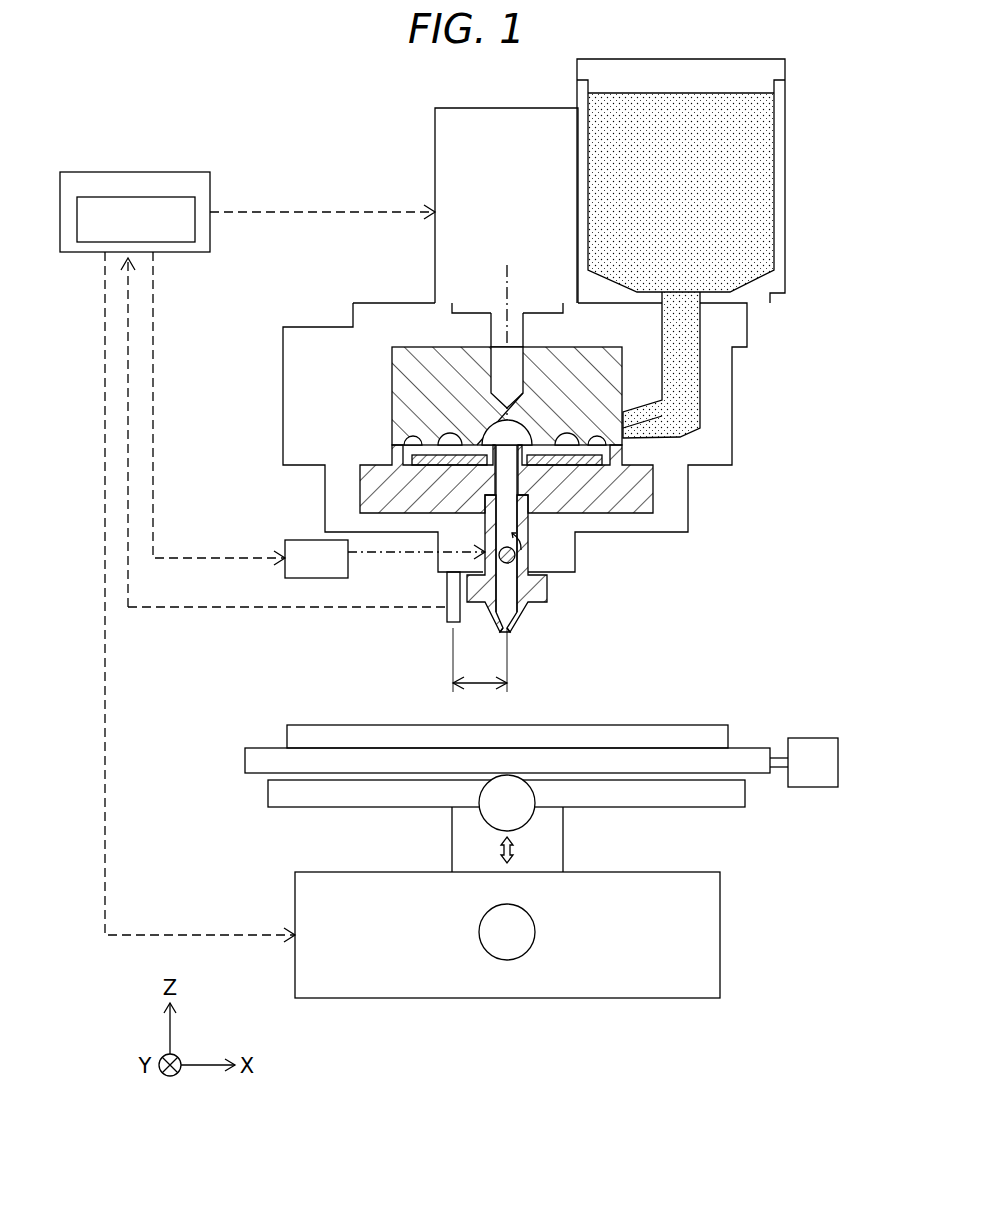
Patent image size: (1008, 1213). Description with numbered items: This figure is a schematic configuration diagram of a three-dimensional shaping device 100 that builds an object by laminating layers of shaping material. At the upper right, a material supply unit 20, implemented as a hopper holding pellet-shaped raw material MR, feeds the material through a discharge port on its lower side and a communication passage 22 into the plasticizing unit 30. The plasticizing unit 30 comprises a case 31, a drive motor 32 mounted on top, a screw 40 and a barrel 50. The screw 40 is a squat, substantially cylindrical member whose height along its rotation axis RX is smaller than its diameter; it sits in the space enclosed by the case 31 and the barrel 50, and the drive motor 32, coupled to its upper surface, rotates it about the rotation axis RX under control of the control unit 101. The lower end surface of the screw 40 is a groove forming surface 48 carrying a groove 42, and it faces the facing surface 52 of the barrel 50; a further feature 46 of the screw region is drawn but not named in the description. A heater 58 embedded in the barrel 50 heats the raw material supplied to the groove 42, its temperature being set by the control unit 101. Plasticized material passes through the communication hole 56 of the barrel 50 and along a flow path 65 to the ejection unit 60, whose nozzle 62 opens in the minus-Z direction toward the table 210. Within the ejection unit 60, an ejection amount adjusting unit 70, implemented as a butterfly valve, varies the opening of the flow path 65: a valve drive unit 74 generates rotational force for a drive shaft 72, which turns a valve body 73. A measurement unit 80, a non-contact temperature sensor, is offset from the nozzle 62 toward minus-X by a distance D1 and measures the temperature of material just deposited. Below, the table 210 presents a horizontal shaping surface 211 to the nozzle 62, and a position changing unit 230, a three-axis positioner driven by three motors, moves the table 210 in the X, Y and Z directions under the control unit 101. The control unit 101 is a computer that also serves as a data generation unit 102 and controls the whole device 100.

The three-dimensional shaping device 100 is at (185, 103).
The control unit 101 is at (130, 172).
The data generation unit 102 is at (97, 197).
The material supply unit 20 is at (721, 248).
The communication passage 22 is at (680, 367).
The plasticizing unit 30 is at (332, 168).
The case 31 is at (400, 307).
The drive motor 32 is at (435, 140).
The screw 40 is at (400, 387).
The groove 42 is at (465, 422).
The central portion 46 is at (497, 400).
The groove forming surface 48 is at (435, 470).
The barrel 50 is at (470, 497).
The facing surface 52 is at (432, 452).
The communication hole 56 is at (482, 457).
The heater 58 is at (610, 500).
The ejection unit 60 is at (533, 623).
The nozzle 62 is at (508, 634).
The flow path 65 is at (525, 517).
The ejection amount adjusting unit 70 is at (613, 622).
The drive shaft 72 is at (547, 585).
The valve body 73 is at (528, 603).
The valve drive unit 74 is at (305, 540).
The measurement unit 80 is at (447, 595).
The table 210 is at (507, 731).
The shaping surface 211 is at (595, 725).
The position changing unit 230 is at (547, 843).
The raw material MR is at (750, 140).
The rotation axis RX is at (507, 278).
The distance D1 is at (480, 660).